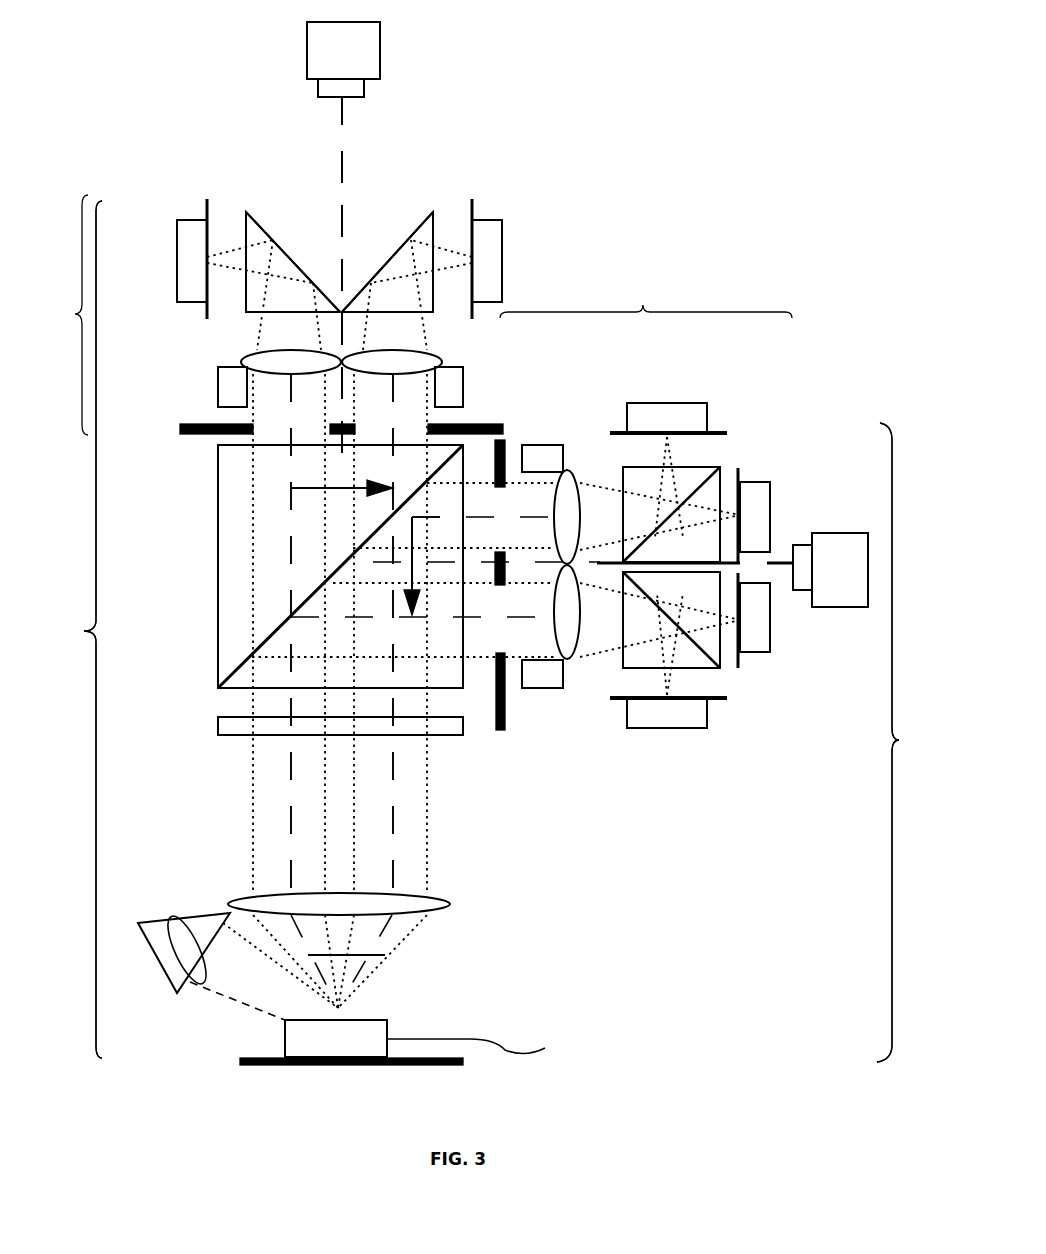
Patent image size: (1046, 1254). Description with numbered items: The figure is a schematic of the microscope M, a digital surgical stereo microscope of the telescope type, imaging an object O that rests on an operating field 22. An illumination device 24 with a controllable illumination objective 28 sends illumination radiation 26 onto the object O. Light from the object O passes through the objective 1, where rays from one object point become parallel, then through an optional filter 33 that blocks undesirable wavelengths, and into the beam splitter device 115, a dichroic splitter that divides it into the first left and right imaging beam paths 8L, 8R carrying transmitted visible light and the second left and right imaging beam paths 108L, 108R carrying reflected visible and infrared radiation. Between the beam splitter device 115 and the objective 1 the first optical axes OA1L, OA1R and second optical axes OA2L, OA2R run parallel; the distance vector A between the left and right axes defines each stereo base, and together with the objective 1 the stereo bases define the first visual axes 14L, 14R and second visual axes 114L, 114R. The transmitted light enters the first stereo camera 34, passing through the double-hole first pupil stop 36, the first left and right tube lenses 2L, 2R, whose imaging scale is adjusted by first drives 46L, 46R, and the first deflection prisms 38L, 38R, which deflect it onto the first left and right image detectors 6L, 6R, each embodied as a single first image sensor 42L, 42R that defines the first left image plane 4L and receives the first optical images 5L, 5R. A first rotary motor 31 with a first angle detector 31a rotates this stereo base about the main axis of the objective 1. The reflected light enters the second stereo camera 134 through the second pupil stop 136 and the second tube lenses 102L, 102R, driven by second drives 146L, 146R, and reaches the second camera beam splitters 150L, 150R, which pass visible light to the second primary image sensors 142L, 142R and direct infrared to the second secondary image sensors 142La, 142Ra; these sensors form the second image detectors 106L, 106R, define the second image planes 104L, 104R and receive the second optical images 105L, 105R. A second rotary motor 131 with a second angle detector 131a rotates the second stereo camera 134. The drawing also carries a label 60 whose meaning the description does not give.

The first rotary motor 31 is at (307, 40).
The first angle detector 31a is at (318, 88).
The microscope M is at (200, 88).
The first left image plane 4L is at (205, 210).
The first left optical image 5L is at (218, 258).
The first right optical image 5R is at (470, 258).
The first left deflection prism 38L is at (297, 257).
The first right deflection prism 38R is at (373, 257).
The first left image detector 6L is at (177, 262).
The first right image detector 6R is at (503, 262).
The first left image sensor 42L is at (177, 274).
The first right image sensor 42R is at (503, 278).
The first stereo camera 34 is at (67, 315).
The first left tube lens 2L is at (241, 358).
The first right tube lens 2R is at (443, 356).
The first left drive 46L is at (218, 385).
The first right drive 46R is at (464, 385).
The first pupil stop 36 is at (215, 424).
The first left optical axis OA1L is at (290, 850).
The second left optical axis OA2L is at (224, 635).
The first right optical axis OA1R is at (393, 857).
The second right optical axis OA2R is at (469, 633).
The beam splitter device 115 is at (217, 565).
The distance vector A is at (410, 563).
The filter 33 is at (218, 725).
The first left imaging beam path 8L is at (78, 629).
The first right imaging beam path 8R is at (78, 629).
The second pupil stop 136 is at (500, 730).
The second left drive 146L is at (542, 445).
The second right drive 146R is at (542, 690).
The second left tube lens 102L is at (567, 470).
The second right tube lens 102R is at (567, 662).
The second stereo camera 134 is at (646, 299).
The second left image detector 106L is at (667, 403).
The second right image detector 106R is at (668, 730).
The second left secondary image sensor 142La is at (647, 403).
The second right secondary image sensor 142Ra is at (655, 730).
The second left image plane 104L is at (722, 430).
The second right image plane 104R is at (722, 705).
The second left optical image 105L is at (677, 455).
The second right optical image 105R is at (730, 672).
The second left camera beam splitter 150L is at (722, 464).
The second right camera beam splitter 150R is at (678, 695).
The second left primary image sensor 142L is at (777, 517).
The second right primary image sensor 142R is at (773, 618).
The second angle detector 131a is at (806, 545).
The second rotary motor 131 is at (843, 533).
The second left imaging beam path 108L is at (913, 742).
The second right imaging beam path 108R is at (911, 742).
The observation unit 60 is at (195, 815).
The objective 1 is at (450, 903).
The first left visual axis 14L is at (383, 955).
The second left visual axis 114L is at (437, 936).
The first right visual axis 14R is at (370, 960).
The second right visual axis 114R is at (405, 982).
The illumination device 24 is at (137, 923).
The illumination objective 28 is at (175, 987).
The illumination radiation 26 is at (237, 1005).
The operating field 22 is at (463, 1062).
The object O is at (545, 1048).